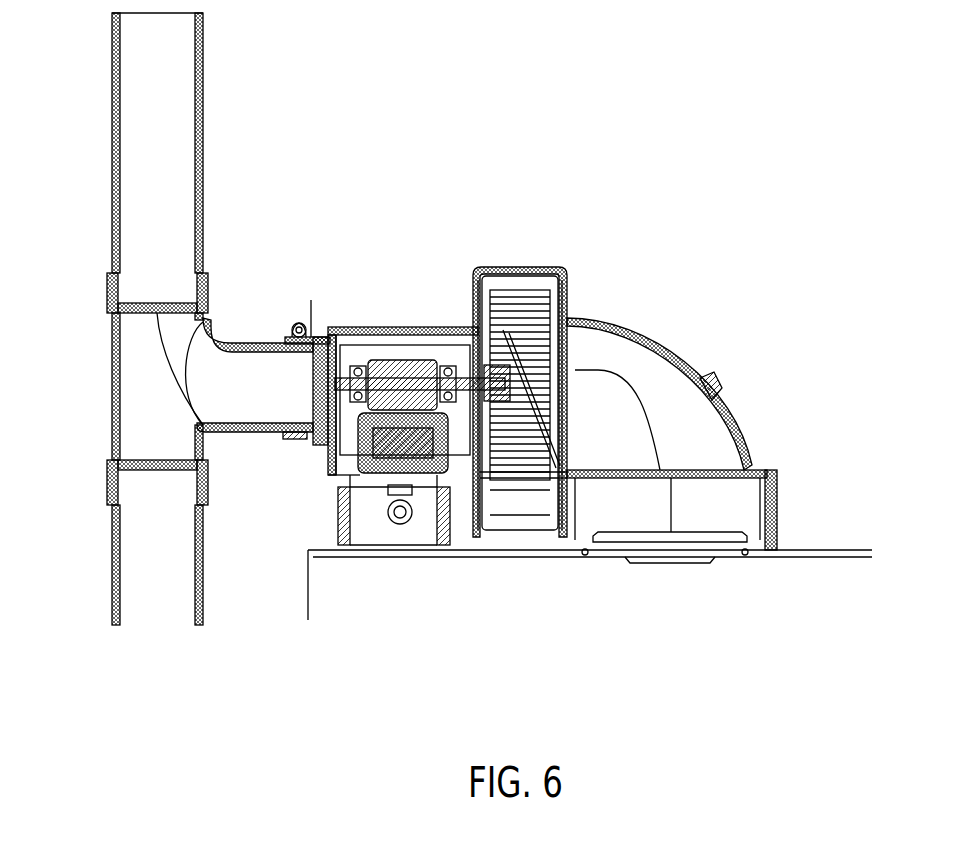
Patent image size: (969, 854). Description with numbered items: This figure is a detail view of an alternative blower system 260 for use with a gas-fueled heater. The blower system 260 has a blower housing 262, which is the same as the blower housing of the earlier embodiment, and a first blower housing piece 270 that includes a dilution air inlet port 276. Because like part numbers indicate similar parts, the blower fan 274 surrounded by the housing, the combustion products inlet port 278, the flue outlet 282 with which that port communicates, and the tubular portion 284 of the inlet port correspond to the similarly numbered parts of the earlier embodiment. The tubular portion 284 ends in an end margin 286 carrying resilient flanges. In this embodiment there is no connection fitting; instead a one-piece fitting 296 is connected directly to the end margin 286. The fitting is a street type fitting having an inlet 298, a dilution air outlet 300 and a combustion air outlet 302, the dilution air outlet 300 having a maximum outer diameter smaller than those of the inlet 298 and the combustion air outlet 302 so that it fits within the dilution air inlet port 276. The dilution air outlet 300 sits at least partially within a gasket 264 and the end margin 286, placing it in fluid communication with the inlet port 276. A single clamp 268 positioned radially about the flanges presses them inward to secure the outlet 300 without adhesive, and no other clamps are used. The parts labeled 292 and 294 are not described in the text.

The blower system 260 is at (658, 245).
The blower housing 262 is at (670, 345).
The gasket 264 is at (285, 337).
The clamp 268 is at (305, 326).
The first blower housing piece 270 is at (412, 328).
The impeller 274 is at (520, 295).
The dilution air inlet port 276 is at (311, 288).
The mounting base 278 is at (768, 528).
The mounting plate 282 is at (710, 532).
The flange 284 is at (322, 337).
The end margin 286 is at (300, 440).
The upper vent pipe 292 is at (170, 244).
The lower vent pipe 294 is at (170, 554).
The one-piece fitting 296 is at (168, 396).
The inlet 298 is at (107, 292).
The dilution air outlet 300 is at (273, 343).
The combustion air outlet 302 is at (107, 487).